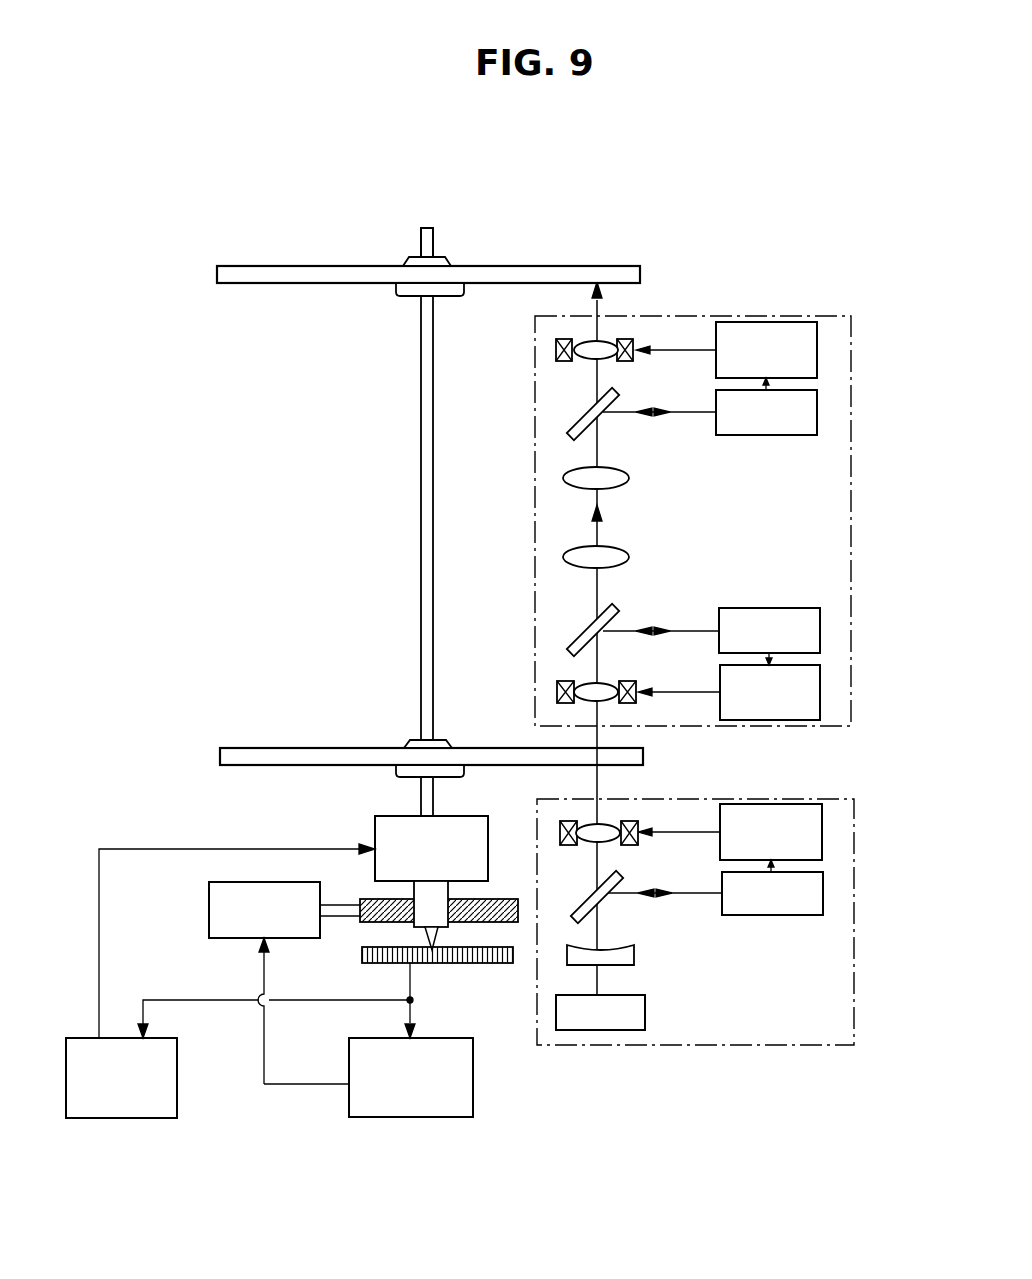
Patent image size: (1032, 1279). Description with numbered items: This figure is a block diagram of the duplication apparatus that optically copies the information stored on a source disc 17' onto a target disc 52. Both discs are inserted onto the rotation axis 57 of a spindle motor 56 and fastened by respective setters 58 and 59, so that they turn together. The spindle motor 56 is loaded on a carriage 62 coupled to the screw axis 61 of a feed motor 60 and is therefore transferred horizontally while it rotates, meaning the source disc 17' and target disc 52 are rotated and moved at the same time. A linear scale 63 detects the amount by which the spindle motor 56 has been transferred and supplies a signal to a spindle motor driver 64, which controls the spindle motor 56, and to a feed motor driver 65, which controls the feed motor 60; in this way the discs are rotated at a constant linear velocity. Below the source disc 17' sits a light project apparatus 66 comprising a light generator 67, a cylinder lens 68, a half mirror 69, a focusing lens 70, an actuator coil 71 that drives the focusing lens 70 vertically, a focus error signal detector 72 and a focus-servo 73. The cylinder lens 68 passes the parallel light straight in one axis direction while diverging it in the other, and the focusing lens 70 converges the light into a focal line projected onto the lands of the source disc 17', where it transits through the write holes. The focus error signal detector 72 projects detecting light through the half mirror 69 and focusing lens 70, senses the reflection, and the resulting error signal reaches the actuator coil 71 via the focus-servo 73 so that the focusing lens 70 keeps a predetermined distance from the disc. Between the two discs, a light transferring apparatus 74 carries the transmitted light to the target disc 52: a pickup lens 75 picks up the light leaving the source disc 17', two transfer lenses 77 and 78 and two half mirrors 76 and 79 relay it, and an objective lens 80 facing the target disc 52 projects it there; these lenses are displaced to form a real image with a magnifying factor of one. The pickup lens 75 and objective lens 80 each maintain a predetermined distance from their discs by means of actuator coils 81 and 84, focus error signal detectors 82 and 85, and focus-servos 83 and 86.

The source disc 17' is at (403, 728).
The target disc 52 is at (219, 268).
The spindle motor 56 is at (377, 824).
The rotation axis 57 is at (420, 434).
The setter 58 is at (407, 742).
The setter 59 is at (406, 258).
The feed motor 60 is at (209, 925).
The screw axis 61 is at (360, 916).
The carriage 62 is at (434, 935).
The linear scale 63 is at (490, 965).
The spindle motor driver 64 is at (473, 1111).
The feed motor driver 65 is at (65, 1038).
The light project apparatus 66 is at (856, 1049).
The light generator 67 is at (645, 1018).
The cylinder lens 68 is at (624, 962).
The half mirror 69 is at (620, 911).
The focusing lens 70 is at (609, 828).
The actuator coil 71 is at (637, 840).
The focus error signal detector 72 is at (823, 903).
The focus-servo 73 is at (822, 836).
The light transferring apparatus 74 is at (850, 308).
The pickup lens 75 is at (584, 690).
The half mirror 76 is at (574, 637).
The transfer lens 77 is at (564, 558).
The transfer lens 78 is at (572, 479).
The half mirror 79 is at (570, 396).
The objective lens 80 is at (586, 355).
The actuator coil 81 is at (558, 692).
The focus error signal detector 82 is at (820, 631).
The focus-servo 83 is at (820, 698).
The actuator coil 84 is at (556, 341).
The focus error signal detector 85 is at (817, 413).
The focus-servo 86 is at (817, 348).